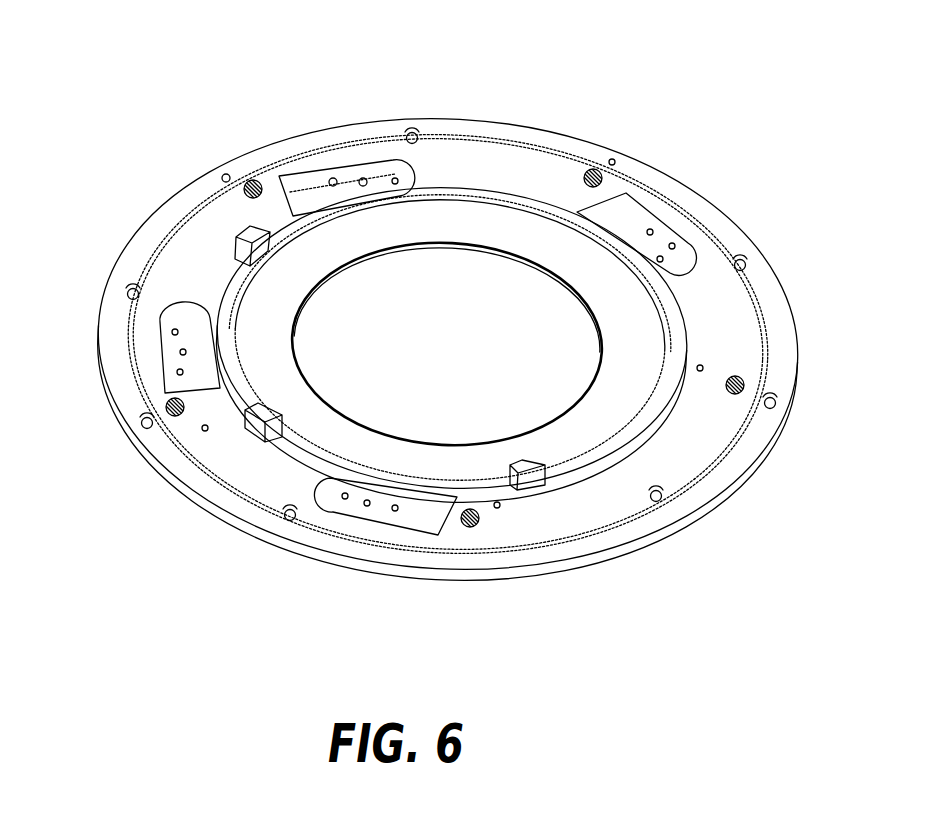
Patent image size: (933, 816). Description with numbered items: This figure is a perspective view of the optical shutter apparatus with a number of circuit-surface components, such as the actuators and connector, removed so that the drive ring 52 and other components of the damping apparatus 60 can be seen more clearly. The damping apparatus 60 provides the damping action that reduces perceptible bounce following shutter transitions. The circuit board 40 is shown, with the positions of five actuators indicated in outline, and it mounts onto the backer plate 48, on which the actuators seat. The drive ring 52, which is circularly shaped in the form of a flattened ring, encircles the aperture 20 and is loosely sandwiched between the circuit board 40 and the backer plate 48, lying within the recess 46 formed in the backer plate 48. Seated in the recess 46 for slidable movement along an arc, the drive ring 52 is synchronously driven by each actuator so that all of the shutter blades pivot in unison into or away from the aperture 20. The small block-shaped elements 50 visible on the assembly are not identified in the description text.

The damping apparatus 60 is at (591, 76).
The circuit board 40 is at (764, 349).
The backer plate 48 is at (727, 212).
The drive ring 52 is at (470, 188).
The recess 46 is at (518, 192).
The aperture 20 is at (457, 391).
The clip 50 is at (242, 236).